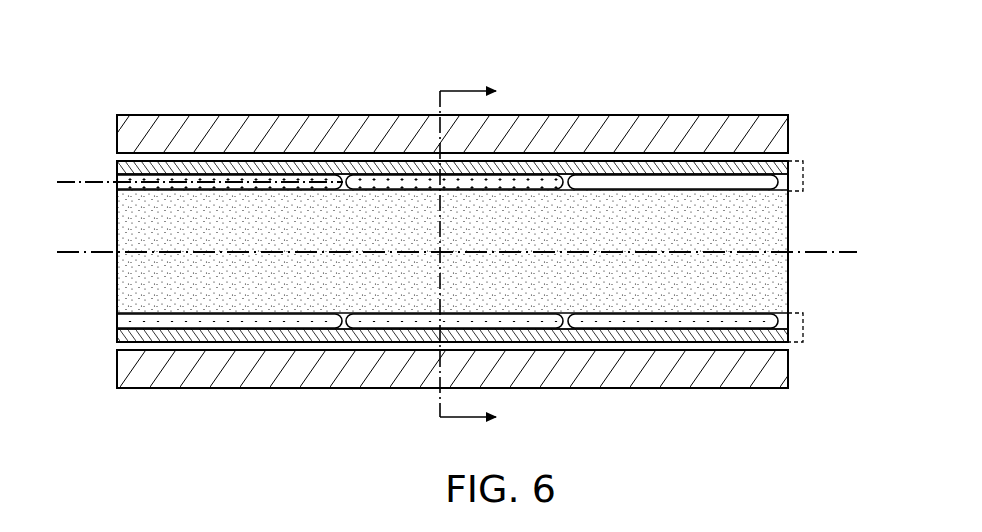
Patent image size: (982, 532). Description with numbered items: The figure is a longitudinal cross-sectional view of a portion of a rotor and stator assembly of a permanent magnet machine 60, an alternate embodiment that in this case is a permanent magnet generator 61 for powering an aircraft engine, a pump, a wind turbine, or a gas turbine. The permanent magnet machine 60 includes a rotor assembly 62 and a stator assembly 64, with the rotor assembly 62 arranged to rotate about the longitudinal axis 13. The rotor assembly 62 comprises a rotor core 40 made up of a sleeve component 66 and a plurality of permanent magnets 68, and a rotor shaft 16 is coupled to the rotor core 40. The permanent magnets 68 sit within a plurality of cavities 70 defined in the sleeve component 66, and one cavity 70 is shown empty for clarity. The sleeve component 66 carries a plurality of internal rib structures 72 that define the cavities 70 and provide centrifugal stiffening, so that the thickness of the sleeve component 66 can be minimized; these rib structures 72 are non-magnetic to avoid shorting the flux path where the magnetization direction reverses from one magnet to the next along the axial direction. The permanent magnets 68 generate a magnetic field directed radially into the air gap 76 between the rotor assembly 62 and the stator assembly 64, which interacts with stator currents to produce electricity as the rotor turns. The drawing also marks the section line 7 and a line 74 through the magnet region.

The permanent magnet machine 60 is at (170, 56).
The permanent magnet generator 61 is at (762, 58).
The stator assembly 64 is at (798, 132).
The rotor assembly 62 is at (866, 210).
The air gap 76 is at (114, 157).
The rotor shaft 16 is at (117, 285).
The sleeve component 66 is at (218, 182).
The permanent magnets 68 is at (372, 182).
The cavities 70 is at (682, 183).
The internal rib structures 72 is at (563, 181).
The electrode axis 74 is at (62, 173).
The longitudinal axis 13 is at (848, 258).
The section line 7- 7 is at (478, 256).
The rotor core 40 is at (803, 176).